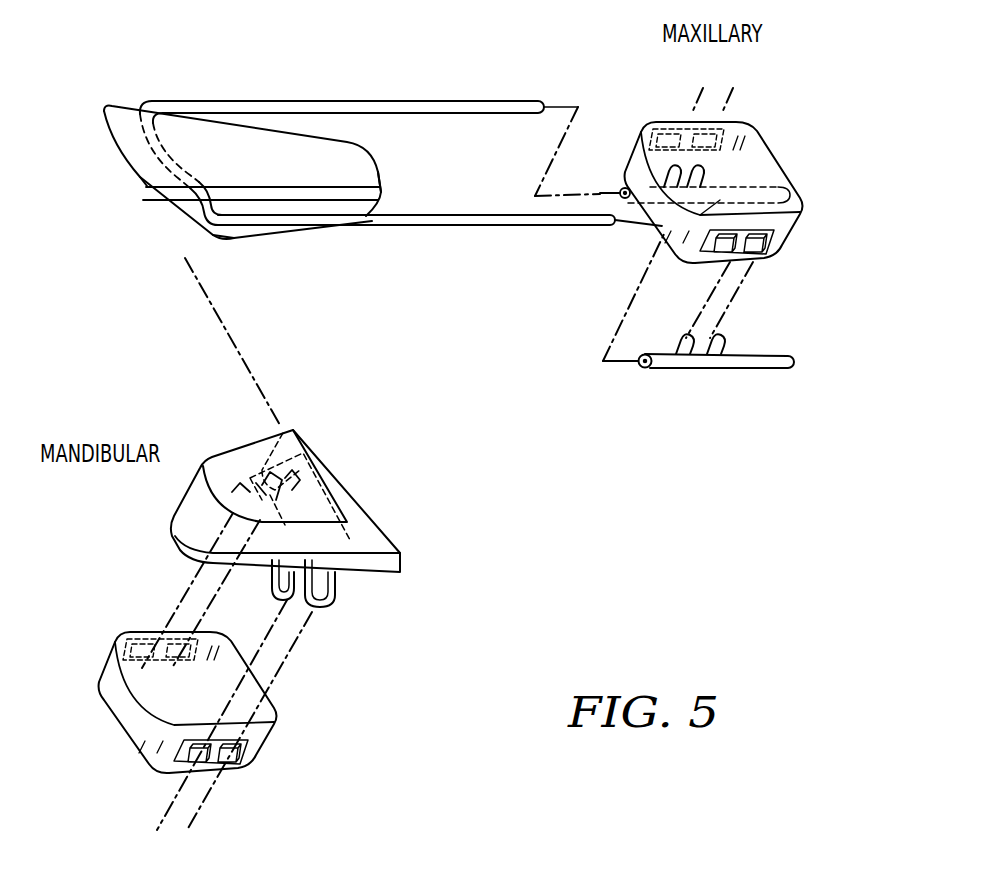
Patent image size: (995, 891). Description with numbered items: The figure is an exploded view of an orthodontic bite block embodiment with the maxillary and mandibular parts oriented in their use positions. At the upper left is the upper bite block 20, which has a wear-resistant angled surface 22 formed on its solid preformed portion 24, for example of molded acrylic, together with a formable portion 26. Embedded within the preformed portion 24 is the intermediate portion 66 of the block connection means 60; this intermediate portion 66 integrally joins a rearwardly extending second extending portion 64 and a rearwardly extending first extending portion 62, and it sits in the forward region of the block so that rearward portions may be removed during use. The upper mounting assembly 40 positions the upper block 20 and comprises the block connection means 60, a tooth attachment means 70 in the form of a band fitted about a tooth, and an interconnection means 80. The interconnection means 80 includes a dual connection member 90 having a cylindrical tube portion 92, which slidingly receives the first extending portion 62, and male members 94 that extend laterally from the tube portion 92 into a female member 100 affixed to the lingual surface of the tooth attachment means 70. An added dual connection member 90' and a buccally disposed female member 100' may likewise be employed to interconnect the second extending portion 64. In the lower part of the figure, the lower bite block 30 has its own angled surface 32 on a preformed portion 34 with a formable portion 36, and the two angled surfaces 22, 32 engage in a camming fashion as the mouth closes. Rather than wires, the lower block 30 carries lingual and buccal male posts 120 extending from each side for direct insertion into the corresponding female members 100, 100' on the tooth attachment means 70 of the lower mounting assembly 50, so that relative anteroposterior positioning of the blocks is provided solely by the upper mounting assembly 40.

The upper bite block 20 is at (259, 196).
The angled surface 22 is at (180, 217).
The preformed portion 24 is at (250, 228).
The formable portion 26 is at (373, 195).
The intermediate portion 66 is at (186, 141).
The block connection means 60 is at (401, 150).
The second extending portion 64 is at (358, 103).
The first extending portion 62 is at (420, 224).
The upper mounting assembly 40 is at (588, 277).
The tooth attachment means 70 is at (488, 443).
The buccally disposed female member 100' is at (423, 366).
The female member 100 is at (500, 522).
The cylindrical tube portion 92 is at (738, 286).
The male members 94 is at (665, 162).
The dual connection member 90 is at (738, 378).
The added dual connection member 90' is at (746, 157).
The interconnection means 80 is at (765, 298).
The lower bite block 30 is at (242, 523).
The angled surface 32 is at (343, 477).
The preformed portion 34 is at (223, 458).
The formable portion 36 is at (170, 525).
The male posts 120 is at (280, 432).
The lower mounting assembly 50 is at (321, 665).